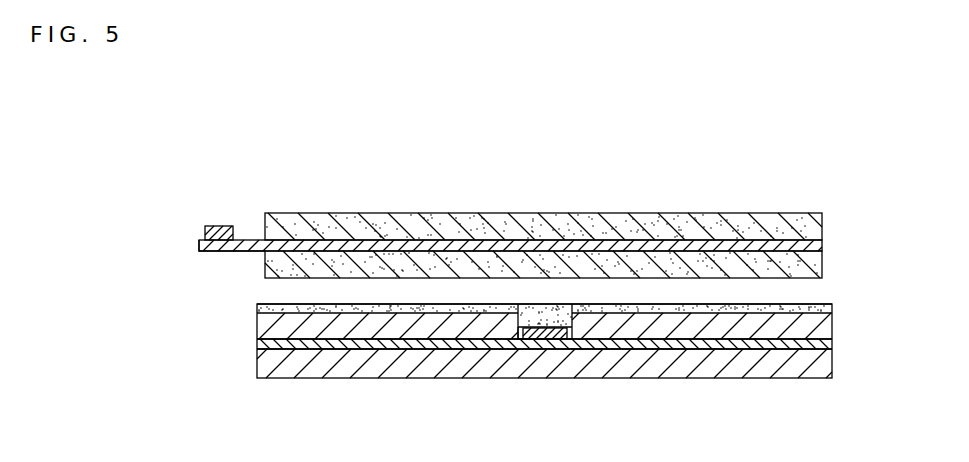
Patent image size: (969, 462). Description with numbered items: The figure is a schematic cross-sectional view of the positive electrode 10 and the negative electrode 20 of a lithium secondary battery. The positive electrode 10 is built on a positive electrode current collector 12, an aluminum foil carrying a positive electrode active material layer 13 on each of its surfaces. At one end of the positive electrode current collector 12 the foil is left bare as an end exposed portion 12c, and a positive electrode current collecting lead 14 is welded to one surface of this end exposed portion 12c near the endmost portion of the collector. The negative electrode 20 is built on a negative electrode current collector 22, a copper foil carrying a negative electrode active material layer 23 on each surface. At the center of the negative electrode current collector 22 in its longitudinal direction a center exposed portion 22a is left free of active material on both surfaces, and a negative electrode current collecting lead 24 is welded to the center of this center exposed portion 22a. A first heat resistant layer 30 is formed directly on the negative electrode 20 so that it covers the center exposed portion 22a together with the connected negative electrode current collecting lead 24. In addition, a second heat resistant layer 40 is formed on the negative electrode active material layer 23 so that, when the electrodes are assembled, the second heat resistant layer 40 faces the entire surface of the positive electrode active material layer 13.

The positive electrode 10 is at (516, 220).
The positive electrode current collector 12 is at (813, 245).
The end exposed portion 12c is at (240, 247).
The positive electrode active material layer 13 is at (297, 238).
The positive electrode current collecting lead 14 is at (220, 226).
The negative electrode 20 is at (539, 362).
The negative electrode current collector 22 is at (257, 346).
The center exposed portion 22a is at (515, 332).
The negative electrode active material layer 23 is at (818, 325).
The negative electrode current collecting lead 24 is at (557, 340).
The first heat resistant layer 30 is at (542, 318).
The second heat resistant layer 40 is at (257, 311).